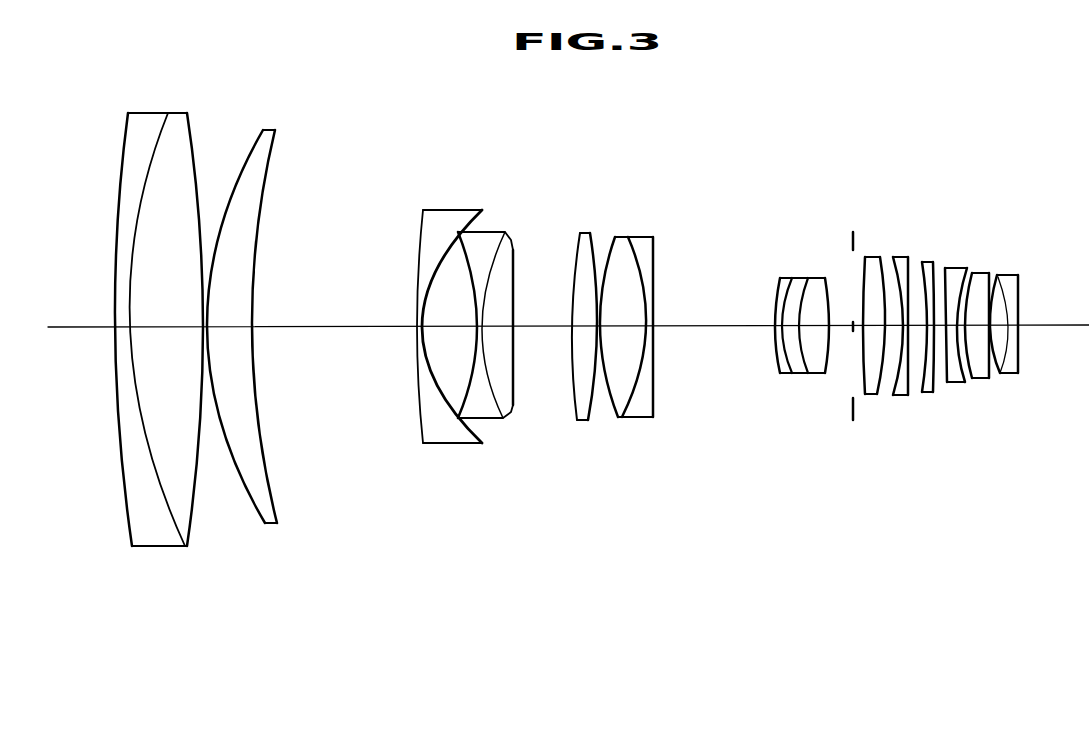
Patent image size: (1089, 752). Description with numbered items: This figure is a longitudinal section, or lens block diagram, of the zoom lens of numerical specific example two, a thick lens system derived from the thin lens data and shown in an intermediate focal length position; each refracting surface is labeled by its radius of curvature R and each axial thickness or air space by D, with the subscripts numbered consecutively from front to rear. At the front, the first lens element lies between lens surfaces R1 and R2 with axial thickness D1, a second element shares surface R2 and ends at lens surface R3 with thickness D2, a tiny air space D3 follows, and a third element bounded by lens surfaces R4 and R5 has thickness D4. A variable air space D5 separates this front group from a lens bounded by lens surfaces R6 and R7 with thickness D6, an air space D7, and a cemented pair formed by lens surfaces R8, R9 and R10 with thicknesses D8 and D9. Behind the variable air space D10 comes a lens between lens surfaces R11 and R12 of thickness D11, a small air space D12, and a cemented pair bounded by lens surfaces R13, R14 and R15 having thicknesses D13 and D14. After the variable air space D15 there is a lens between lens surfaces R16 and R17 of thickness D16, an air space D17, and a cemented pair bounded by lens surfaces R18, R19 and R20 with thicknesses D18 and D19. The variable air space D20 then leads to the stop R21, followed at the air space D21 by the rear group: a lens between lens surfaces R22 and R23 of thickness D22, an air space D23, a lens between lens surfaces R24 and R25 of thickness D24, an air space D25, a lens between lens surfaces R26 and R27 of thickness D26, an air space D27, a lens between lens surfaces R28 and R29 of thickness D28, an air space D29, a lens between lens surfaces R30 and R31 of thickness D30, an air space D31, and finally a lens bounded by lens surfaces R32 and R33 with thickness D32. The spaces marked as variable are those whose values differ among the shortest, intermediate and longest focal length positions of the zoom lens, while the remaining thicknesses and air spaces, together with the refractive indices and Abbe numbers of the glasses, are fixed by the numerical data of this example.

The lens surface R1 is at (136, 296).
The lens surface R2 is at (157, 296).
The lens surface R3 is at (197, 296).
The lens surface R4 is at (236, 285).
The lens surface R5 is at (257, 285).
The lens surface R6 is at (418, 290).
The lens surface R7 is at (452, 290).
The lens surface R8 is at (468, 277).
The lens surface R9 is at (493, 277).
The lens surface R10 is at (517, 271).
The lens surface R11 is at (574, 293).
The lens surface R12 is at (588, 278).
The lens surface R13 is at (611, 291).
The lens surface R14 is at (631, 277).
The lens surface R15 is at (649, 291).
The lens surface R16 is at (773, 267).
The lens surface R17 is at (796, 282).
The lens surface R18 is at (812, 267).
The lens surface R19 is at (832, 282).
The lens surface R20 is at (848, 291).
The stop R21 is at (867, 293).
The lens surface R22 is at (880, 278).
The lens surface R23 is at (897, 293).
The lens surface R24 is at (913, 278).
The lens surface R25 is at (930, 292).
The lens surface R26 is at (946, 277).
The lens surface R27 is at (960, 287).
The lens surface R28 is at (971, 272).
The lens surface R29 is at (985, 285).
The lens surface R30 is at (1003, 270).
The lens surface R31 is at (1013, 282).
The lens surface R32 is at (1023, 267).
The lens surface R33 is at (1043, 282).
The axial thickness D1 is at (140, 460).
The axial thickness D2 is at (177, 460).
The air space D3 is at (217, 461).
The axial thickness D4 is at (247, 460).
The variable air space D5 is at (335, 399).
The axial thickness D6 is at (424, 414).
The air space D7 is at (455, 414).
The axial thickness D8 is at (487, 414).
The axial thickness D9 is at (511, 414).
The variable air space D10 is at (545, 400).
The axial thickness D11 is at (580, 413).
The air space D12 is at (601, 400).
The axial thickness D13 is at (622, 414).
The axial thickness D14 is at (643, 400).
The variable air space D15 is at (712, 400).
The axial thickness D16 is at (782, 398).
The air space D17 is at (797, 413).
The axial thickness D18 is at (812, 398).
The axial thickness D19 is at (827, 413).
The variable air space D20 is at (845, 398).
The air space D21 is at (858, 413).
The axial thickness D22 is at (876, 398).
The air space D23 is at (891, 413).
The axial thickness D24 is at (906, 398).
The air space D25 is at (920, 413).
The axial thickness D26 is at (938, 398).
The air space D27 is at (948, 413).
The axial thickness D28 is at (966, 398).
The air space D29 is at (977, 413).
The axial thickness D30 is at (995, 398).
The air space D31 is at (1008, 413).
The axial thickness D32 is at (1027, 398).